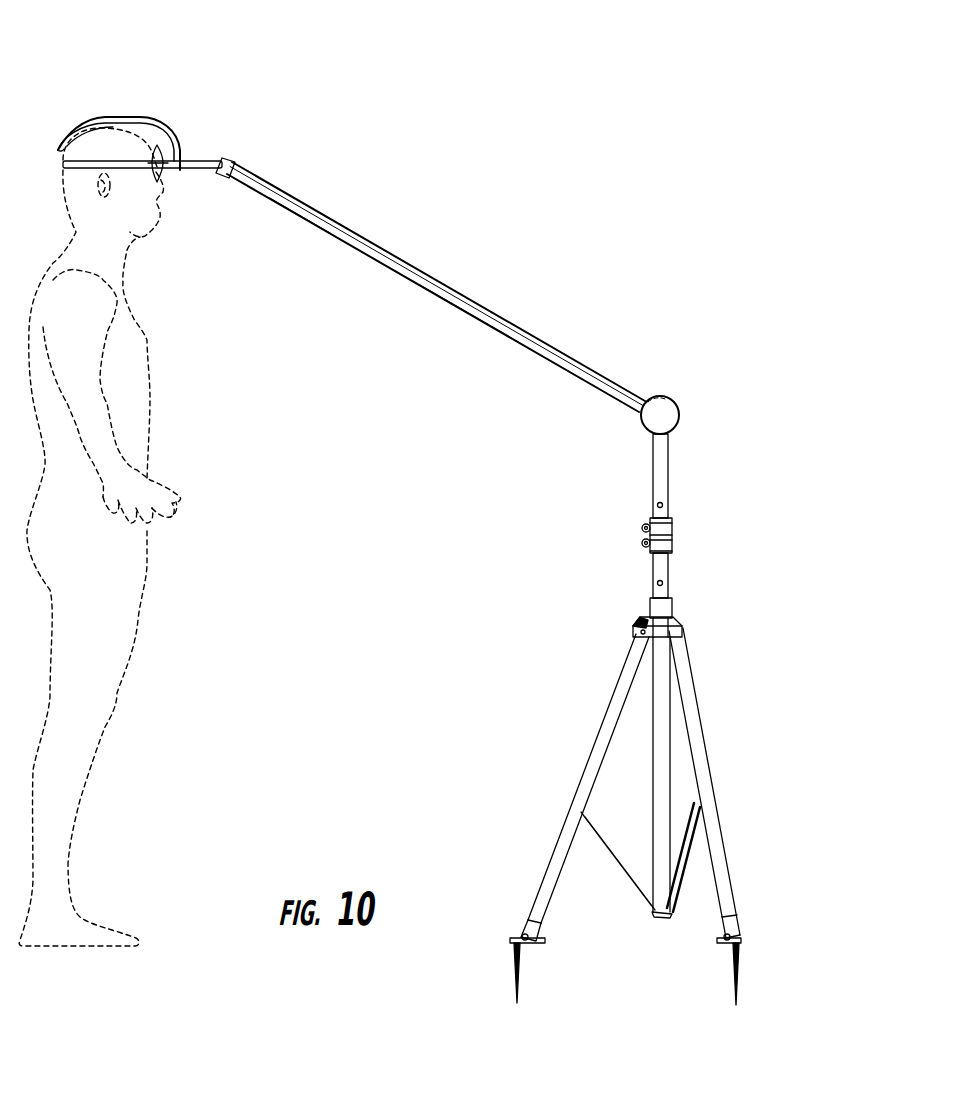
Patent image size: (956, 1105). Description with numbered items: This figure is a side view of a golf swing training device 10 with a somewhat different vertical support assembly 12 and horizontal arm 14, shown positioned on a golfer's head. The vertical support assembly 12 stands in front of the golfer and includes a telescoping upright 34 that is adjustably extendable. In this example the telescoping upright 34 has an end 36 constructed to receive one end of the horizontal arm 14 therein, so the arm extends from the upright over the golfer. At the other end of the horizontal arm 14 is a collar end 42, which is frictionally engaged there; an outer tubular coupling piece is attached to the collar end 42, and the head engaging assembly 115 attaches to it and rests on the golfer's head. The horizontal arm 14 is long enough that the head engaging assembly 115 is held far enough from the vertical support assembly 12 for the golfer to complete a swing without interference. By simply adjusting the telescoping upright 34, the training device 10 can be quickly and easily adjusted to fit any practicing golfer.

The golf swing training device 10 is at (497, 566).
The vertical support assembly 12 is at (635, 762).
The horizontal arm 14 is at (436, 287).
The telescoping upright 34 is at (710, 493).
The end 36 is at (686, 400).
The collar end 42 is at (257, 152).
The head engaging assembly 115 is at (170, 119).